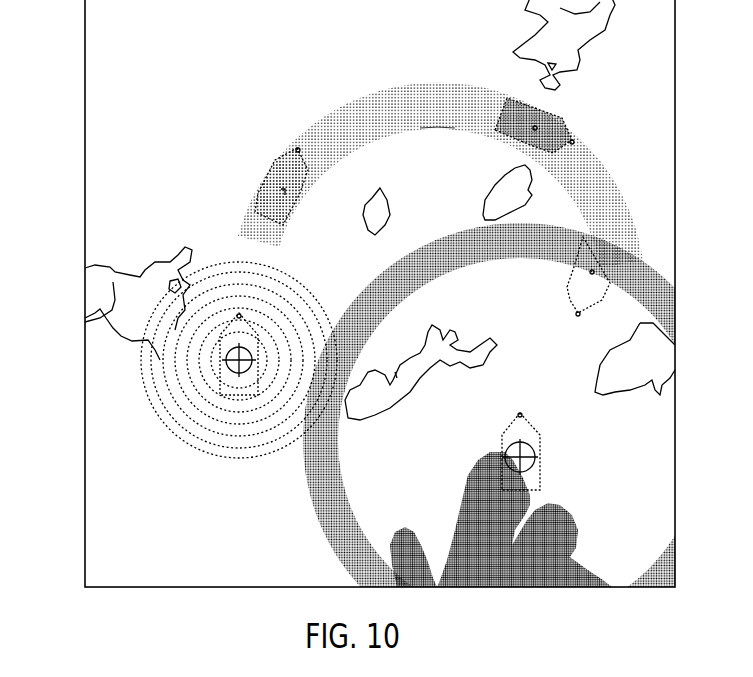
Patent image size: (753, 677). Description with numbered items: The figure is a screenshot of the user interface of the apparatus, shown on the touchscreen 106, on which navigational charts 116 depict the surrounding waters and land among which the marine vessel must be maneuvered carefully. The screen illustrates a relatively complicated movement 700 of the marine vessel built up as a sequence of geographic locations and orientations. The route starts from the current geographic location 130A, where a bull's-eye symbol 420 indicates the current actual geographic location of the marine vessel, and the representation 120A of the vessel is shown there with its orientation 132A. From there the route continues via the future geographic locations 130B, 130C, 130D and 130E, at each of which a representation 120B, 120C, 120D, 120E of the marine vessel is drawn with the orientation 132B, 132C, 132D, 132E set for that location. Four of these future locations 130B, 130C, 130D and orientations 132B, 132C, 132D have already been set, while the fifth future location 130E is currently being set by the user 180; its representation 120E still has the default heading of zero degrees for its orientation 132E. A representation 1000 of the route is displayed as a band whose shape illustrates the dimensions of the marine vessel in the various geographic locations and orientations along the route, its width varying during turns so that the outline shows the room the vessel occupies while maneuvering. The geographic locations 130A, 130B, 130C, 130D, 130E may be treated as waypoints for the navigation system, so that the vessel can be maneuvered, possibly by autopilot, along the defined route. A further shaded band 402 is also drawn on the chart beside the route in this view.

The touchscreen 106 is at (85, 18).
The navigational charts 116 is at (182, 551).
The movement 700 is at (392, 89).
The representation of a route 1000 is at (437, 130).
The second data band 402 is at (305, 492).
The user 180 is at (476, 494).
The bull's-eye symbol 420 is at (316, 283).
The representation of the marine vessel 120A is at (258, 352).
The current geographic location 130A is at (232, 365).
The orientation 132A is at (239, 313).
The representation of the marine vessel 120B is at (298, 203).
The future geographic location 130B is at (283, 192).
The orientation 132B is at (310, 133).
The representation of the marine vessel 120C is at (560, 118).
The future geographic location 130C is at (535, 128).
The orientation 132C is at (572, 143).
The representation of the marine vessel 120D is at (567, 288).
The future geographic location 130D is at (592, 272).
The orientation 132D is at (578, 315).
The representation of the marine vessel 120E is at (540, 450).
The future geographic location 130E is at (516, 456).
The orientation 132E is at (520, 413).